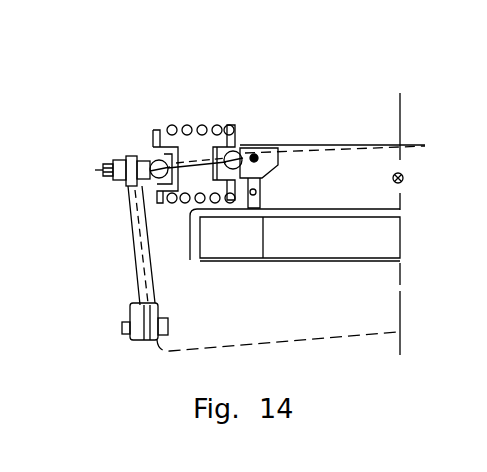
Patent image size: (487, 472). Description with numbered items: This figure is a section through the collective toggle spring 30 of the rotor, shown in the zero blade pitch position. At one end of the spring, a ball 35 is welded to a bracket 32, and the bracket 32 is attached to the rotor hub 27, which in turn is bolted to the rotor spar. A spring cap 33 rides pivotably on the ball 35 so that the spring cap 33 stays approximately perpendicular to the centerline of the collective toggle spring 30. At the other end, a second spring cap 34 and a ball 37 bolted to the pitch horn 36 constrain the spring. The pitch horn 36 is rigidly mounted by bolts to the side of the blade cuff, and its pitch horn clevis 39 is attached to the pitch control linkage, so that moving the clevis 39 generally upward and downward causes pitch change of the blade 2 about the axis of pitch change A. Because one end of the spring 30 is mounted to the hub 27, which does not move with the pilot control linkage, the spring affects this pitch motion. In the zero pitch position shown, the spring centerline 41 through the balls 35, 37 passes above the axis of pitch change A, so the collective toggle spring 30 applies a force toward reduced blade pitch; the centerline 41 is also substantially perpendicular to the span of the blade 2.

The blade 2 is at (340, 337).
The rotor hub 27 is at (366, 144).
The collective toggle spring 30 is at (203, 127).
The bracket 32 is at (298, 147).
The spring cap 33 is at (238, 128).
The spring cap 34 is at (153, 152).
The ball 35 is at (240, 150).
The pitch horn 36 is at (130, 231).
The ball 37 is at (150, 160).
The pitch horn clevis 39 is at (122, 328).
The spring centerline 41 is at (412, 146).
The axis of pitch change A is at (404, 178).